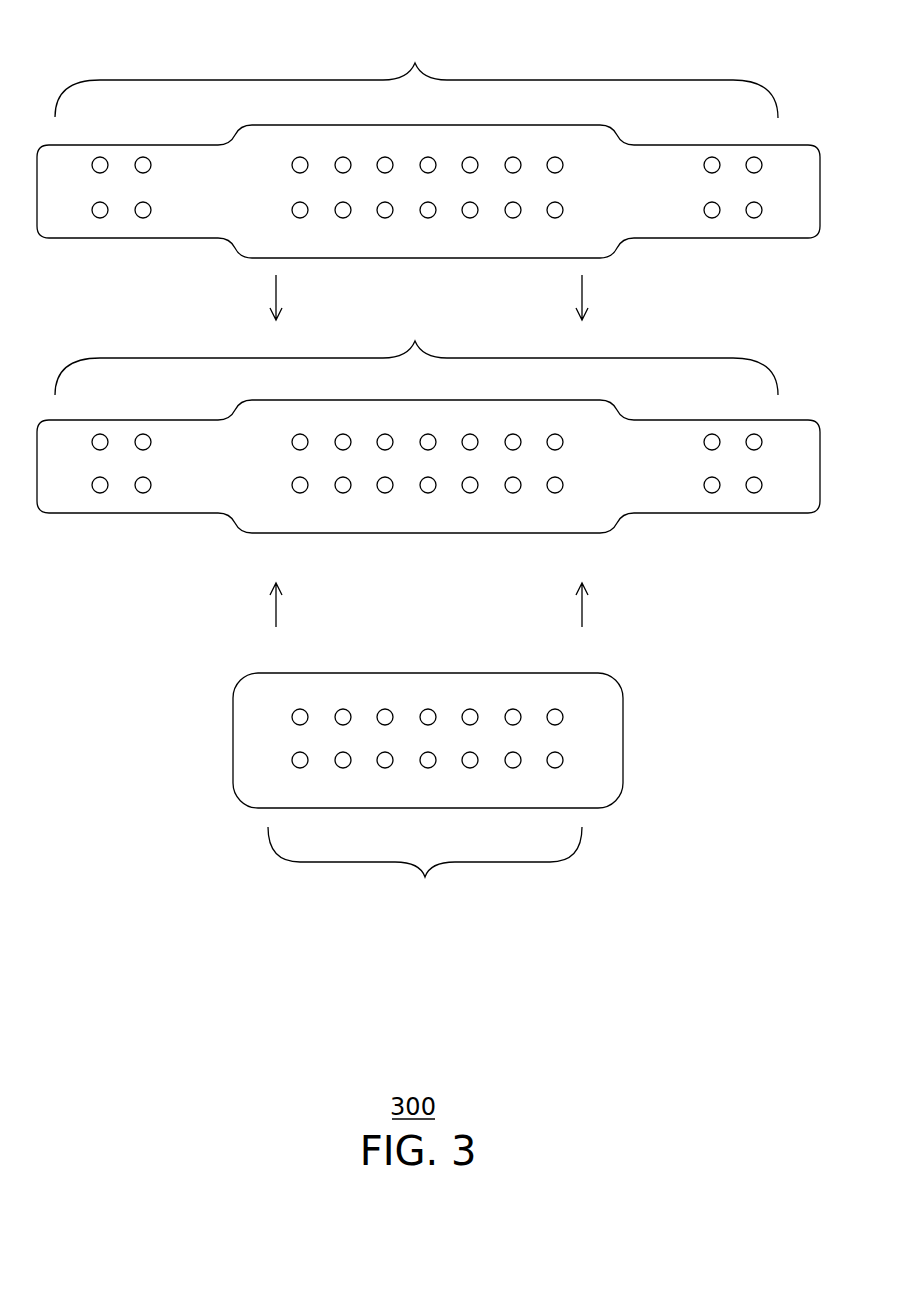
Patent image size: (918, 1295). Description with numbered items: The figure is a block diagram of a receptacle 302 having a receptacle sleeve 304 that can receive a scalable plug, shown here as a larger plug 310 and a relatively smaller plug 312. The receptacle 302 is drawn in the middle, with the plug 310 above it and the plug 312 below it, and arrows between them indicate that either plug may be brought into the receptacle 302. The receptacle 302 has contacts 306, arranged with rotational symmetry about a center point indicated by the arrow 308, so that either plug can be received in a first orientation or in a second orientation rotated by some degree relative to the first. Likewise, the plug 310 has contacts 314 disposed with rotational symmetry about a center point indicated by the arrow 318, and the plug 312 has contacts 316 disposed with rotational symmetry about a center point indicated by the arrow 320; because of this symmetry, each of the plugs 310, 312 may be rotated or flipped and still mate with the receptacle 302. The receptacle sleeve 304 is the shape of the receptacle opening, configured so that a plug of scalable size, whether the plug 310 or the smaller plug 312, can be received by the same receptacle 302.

The receptacle 302 is at (428, 446).
The receptacle sleeve 304 is at (451, 446).
The contacts 306 is at (416, 354).
The center point 308 is at (427, 463).
The plug 310 is at (428, 137).
The plug 312 is at (481, 795).
The contacts 314 is at (416, 71).
The contacts 316 is at (425, 872).
The center point 318 is at (427, 190).
The center point 320 is at (427, 737).